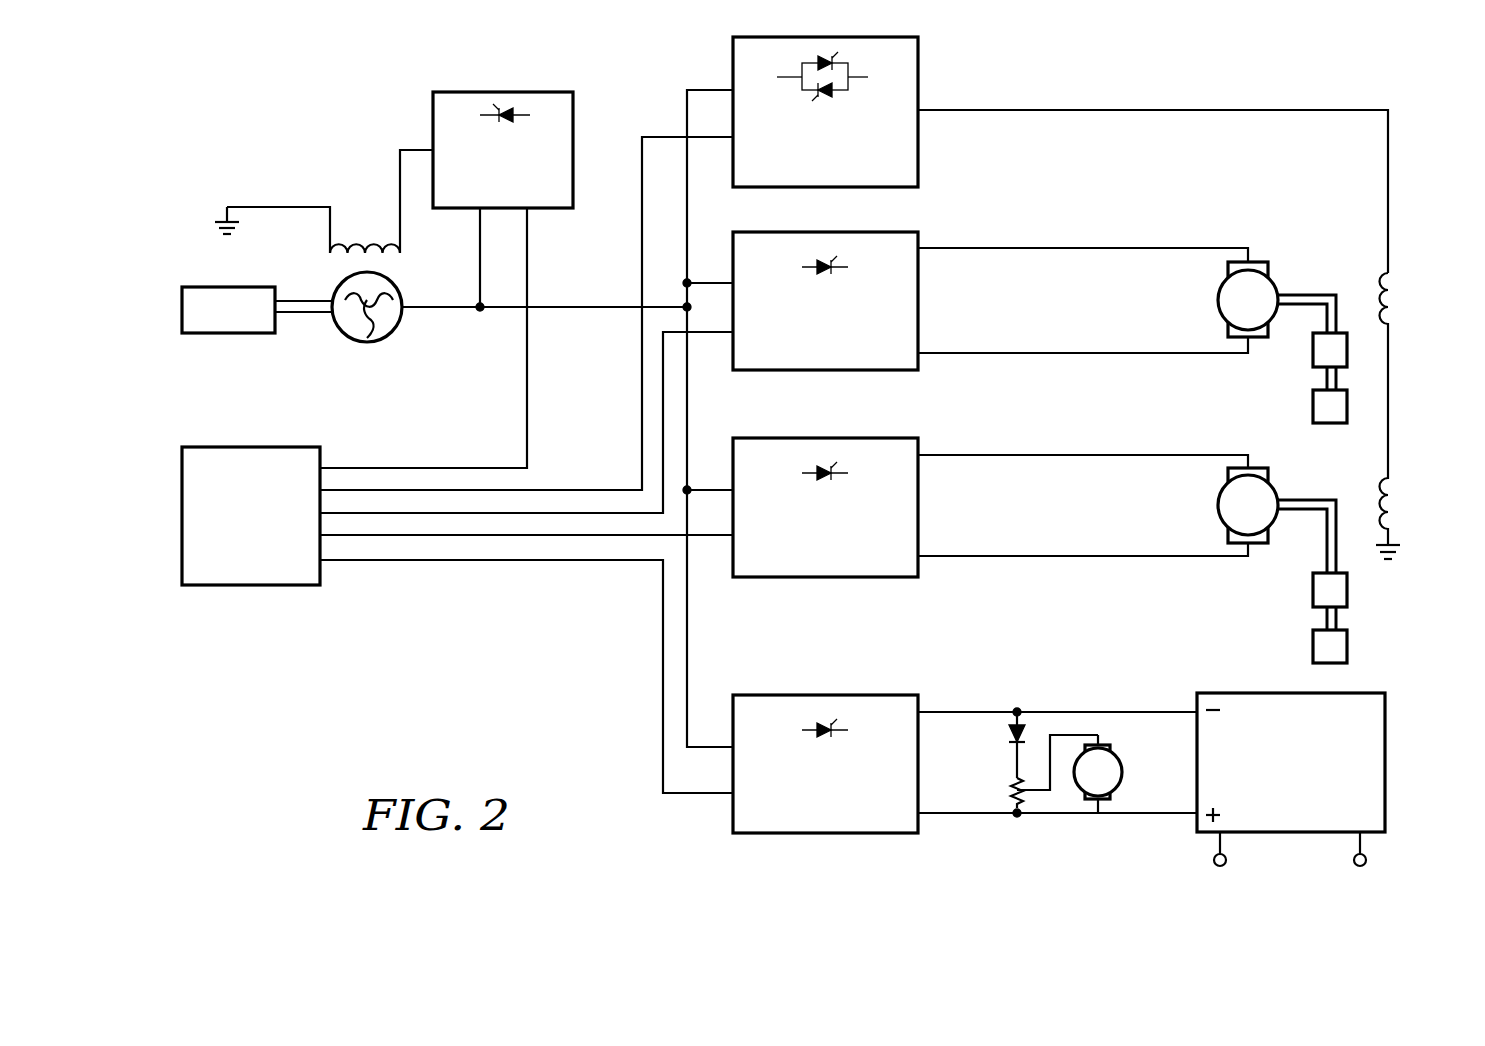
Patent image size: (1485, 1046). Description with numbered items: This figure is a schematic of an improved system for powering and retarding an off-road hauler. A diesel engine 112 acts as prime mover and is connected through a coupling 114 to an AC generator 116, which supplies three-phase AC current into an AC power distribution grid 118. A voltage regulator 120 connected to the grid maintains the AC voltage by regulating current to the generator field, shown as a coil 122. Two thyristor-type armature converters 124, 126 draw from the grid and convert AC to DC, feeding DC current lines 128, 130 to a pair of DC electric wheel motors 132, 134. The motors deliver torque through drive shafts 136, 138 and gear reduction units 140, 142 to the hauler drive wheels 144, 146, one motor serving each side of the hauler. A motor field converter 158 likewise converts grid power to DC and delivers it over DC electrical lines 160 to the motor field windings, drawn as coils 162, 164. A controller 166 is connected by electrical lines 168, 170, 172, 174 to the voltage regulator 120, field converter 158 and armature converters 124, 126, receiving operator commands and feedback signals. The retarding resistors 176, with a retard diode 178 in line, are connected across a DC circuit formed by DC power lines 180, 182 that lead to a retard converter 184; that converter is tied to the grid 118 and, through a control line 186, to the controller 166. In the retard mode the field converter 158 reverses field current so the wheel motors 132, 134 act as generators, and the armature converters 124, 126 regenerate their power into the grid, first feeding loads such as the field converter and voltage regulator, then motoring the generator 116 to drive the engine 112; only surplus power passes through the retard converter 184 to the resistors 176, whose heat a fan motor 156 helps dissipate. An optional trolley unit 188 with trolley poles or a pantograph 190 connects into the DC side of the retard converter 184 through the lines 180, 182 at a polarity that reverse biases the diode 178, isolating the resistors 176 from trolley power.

The engine 112 is at (182, 312).
The coupling 114 is at (313, 299).
The AC generator 116 is at (402, 296).
The AC power distribution grid 118 is at (480, 245).
The voltage regulator 120 is at (433, 120).
The generator field coil 122 is at (372, 245).
The armature converter 124 is at (918, 240).
The armature converter 126 is at (918, 570).
The DC current lines 128 is at (1052, 247).
The DC current lines 130 is at (1142, 452).
The DC electric wheel motor 132 is at (1218, 300).
The DC electric wheel motor 134 is at (1218, 505).
The drive shaft 136 is at (1300, 290).
The drive shaft 138 is at (1300, 497).
The gear reduction unit 140 is at (1311, 354).
The gear reduction unit 142 is at (1311, 590).
The hauler drive wheel 144 is at (1311, 410).
The hauler drive wheel 146 is at (1311, 645).
The fan motor 156 is at (1122, 772).
The field converter 158 is at (918, 75).
The DC electrical lines 160 is at (1140, 108).
The motor field winding 162 is at (1393, 292).
The motor field winding 164 is at (1393, 500).
The controller 166 is at (182, 513).
The electrical line 168 is at (492, 466).
The electrical line 170 is at (570, 488).
The electrical line 172 is at (625, 511).
The electrical line 174 is at (492, 540).
The retarding resistors 176 is at (1010, 790).
The retard diode 178 is at (1005, 738).
The DC power line 180 is at (975, 710).
The DC power line 182 is at (975, 820).
The retard converter 184 is at (885, 693).
The control line 186 is at (565, 562).
The trolley unit 188 is at (1385, 755).
The trolley poles 190 is at (1218, 852).